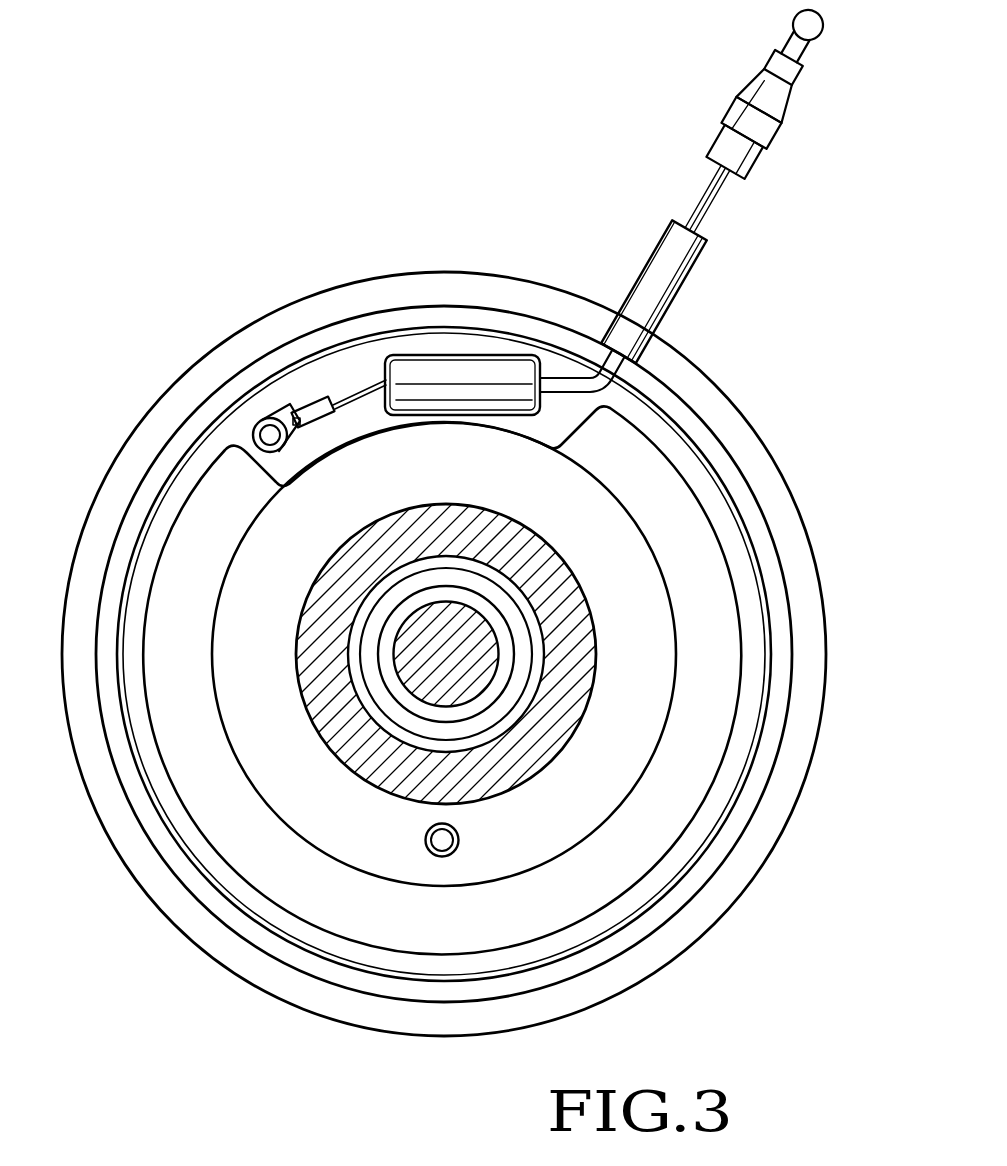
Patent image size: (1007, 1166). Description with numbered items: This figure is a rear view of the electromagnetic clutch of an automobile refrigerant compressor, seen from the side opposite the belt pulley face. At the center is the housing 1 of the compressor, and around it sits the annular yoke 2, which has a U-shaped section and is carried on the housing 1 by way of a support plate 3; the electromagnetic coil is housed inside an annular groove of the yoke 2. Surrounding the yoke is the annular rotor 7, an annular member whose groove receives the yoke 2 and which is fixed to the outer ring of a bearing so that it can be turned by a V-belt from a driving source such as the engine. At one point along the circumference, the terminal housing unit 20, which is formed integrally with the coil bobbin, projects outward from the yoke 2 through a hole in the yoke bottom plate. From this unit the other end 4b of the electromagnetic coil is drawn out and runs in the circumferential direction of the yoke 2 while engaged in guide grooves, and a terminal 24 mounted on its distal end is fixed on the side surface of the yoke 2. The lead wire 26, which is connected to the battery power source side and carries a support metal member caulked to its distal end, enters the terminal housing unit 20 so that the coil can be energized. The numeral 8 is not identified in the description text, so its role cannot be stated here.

The housing 1 is at (392, 772).
The annular yoke 2 is at (262, 404).
The support plate 3 is at (206, 519).
The other end of the electromagnetic coil 4b is at (344, 392).
The rotor 7 is at (762, 414).
The shaft core 8 is at (477, 675).
The terminal housing unit 20 is at (460, 354).
The terminal 24 is at (279, 417).
The lead wire 26 is at (556, 377).